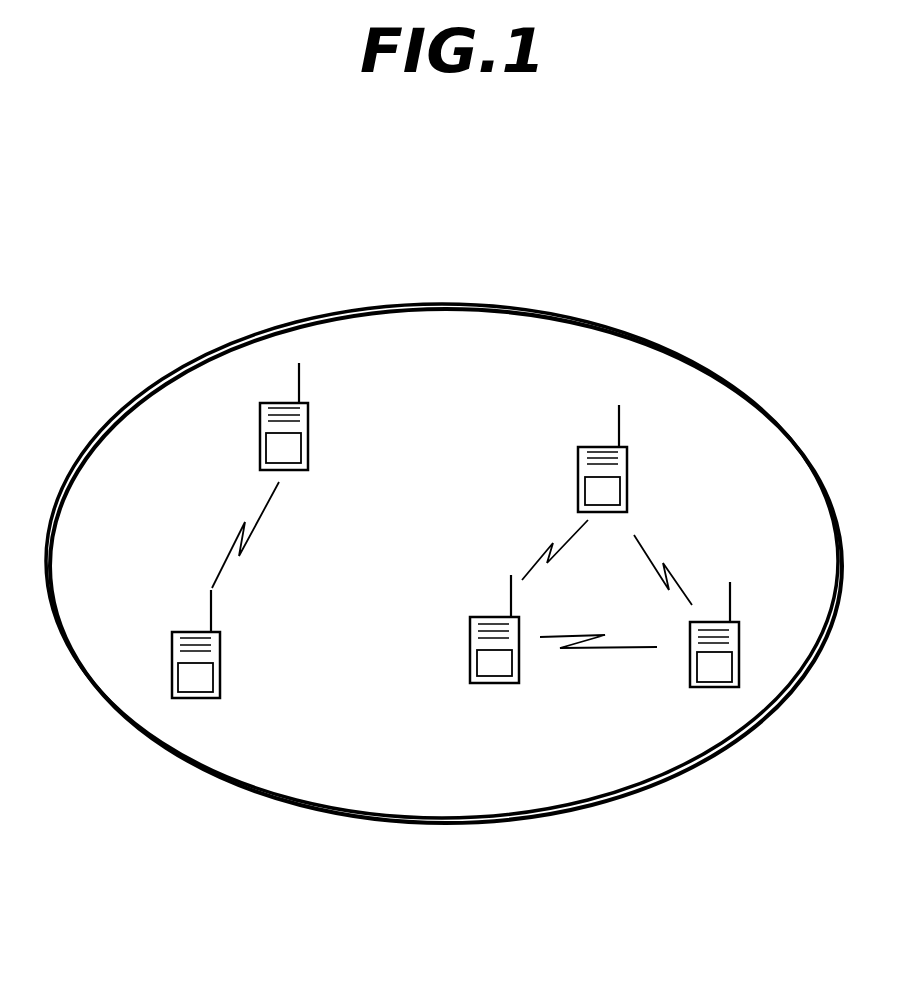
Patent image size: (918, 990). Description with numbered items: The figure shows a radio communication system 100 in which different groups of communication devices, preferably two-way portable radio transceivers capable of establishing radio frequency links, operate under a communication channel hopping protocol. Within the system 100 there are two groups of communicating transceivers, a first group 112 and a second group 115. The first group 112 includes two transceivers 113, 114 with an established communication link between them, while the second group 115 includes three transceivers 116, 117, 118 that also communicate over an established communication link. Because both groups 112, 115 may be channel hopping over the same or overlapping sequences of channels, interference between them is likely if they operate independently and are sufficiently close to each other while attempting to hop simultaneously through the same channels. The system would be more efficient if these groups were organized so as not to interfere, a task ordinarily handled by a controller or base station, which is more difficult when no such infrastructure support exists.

The radio communication system 100 is at (97, 880).
The first group 112 is at (177, 542).
The transceiver 113 is at (222, 660).
The transceiver 114 is at (312, 430).
The second group 115 is at (533, 542).
The transceiver 116 is at (627, 477).
The transceiver 117 is at (505, 685).
The transceiver 118 is at (708, 690).